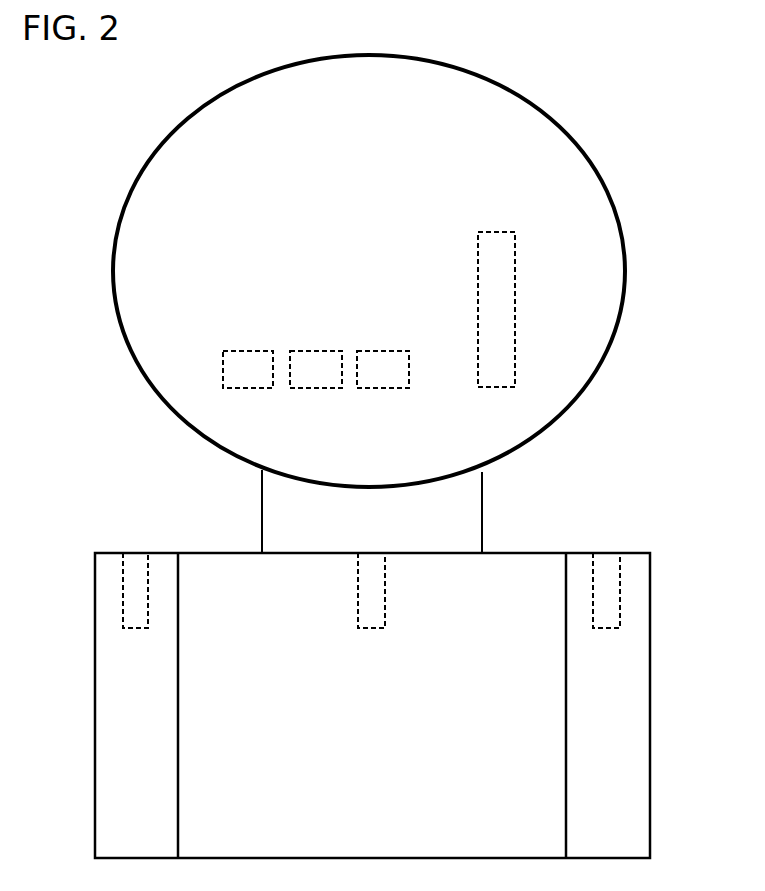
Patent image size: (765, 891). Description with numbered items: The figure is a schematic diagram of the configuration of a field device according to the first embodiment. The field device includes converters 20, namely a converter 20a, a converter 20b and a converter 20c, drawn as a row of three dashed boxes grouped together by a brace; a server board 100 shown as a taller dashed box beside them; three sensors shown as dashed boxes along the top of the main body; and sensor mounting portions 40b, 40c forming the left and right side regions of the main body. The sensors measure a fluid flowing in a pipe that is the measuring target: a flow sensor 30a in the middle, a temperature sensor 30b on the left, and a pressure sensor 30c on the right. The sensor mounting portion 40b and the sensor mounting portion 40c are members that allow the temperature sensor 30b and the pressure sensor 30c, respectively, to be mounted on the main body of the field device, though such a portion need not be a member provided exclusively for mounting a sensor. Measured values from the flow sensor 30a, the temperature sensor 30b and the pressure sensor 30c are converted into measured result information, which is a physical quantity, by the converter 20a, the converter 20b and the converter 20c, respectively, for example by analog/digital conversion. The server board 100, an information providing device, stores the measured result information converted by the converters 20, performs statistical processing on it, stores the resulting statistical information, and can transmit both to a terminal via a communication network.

The converters 20 is at (268, 336).
The converter 20a is at (314, 350).
The converter 20b is at (248, 350).
The converter 20c is at (381, 350).
The server board 100 is at (478, 251).
The flow sensor 30a is at (370, 630).
The temperature sensor 30b is at (136, 630).
The pressure sensor 30c is at (605, 630).
The sensor mounting portion 40b is at (95, 700).
The sensor mounting portion 40c is at (650, 700).